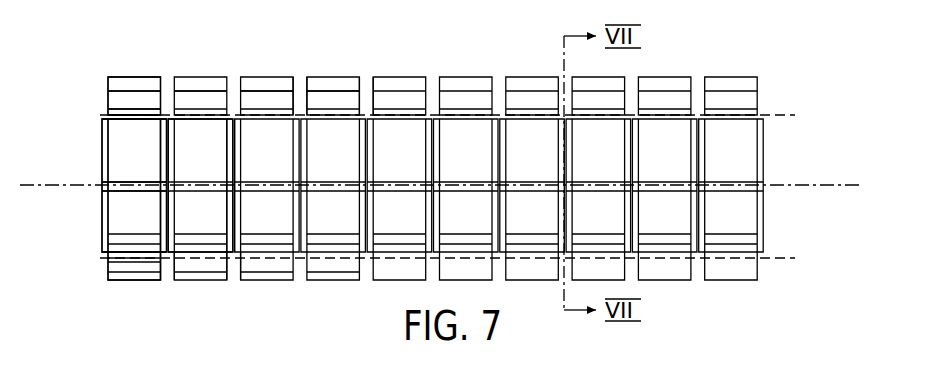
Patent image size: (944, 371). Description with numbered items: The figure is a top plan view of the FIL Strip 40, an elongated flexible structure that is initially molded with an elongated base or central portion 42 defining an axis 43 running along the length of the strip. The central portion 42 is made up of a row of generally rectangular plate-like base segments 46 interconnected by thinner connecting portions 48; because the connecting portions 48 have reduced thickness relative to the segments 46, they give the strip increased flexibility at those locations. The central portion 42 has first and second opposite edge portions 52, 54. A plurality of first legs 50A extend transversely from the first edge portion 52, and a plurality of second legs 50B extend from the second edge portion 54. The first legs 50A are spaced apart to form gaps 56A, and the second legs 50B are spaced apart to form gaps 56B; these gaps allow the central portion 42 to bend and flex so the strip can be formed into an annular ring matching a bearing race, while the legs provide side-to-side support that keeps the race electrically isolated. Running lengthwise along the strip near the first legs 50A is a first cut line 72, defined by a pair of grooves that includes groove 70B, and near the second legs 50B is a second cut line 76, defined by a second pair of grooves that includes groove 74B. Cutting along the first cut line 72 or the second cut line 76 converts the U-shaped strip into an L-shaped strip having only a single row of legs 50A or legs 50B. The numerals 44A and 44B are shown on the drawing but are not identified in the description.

The FIL Strip 40 is at (729, 74).
The elongated central portion 42 is at (115, 160).
The axis 43 is at (805, 183).
The first gate electrode 44A is at (135, 77).
The second gate electrode 44B is at (132, 281).
The base segments 46 is at (193, 135).
The connecting portions 48 is at (166, 117).
The first legs 50A is at (113, 76).
The second legs 50B is at (145, 281).
The first edge portion 52 is at (103, 120).
The second edge portion 54 is at (102, 259).
The gaps 56A is at (300, 92).
The gaps 56B is at (167, 268).
The groove 70B is at (107, 118).
The first cut line 72 is at (775, 113).
The groove 74B is at (108, 263).
The second cut line 76 is at (780, 257).